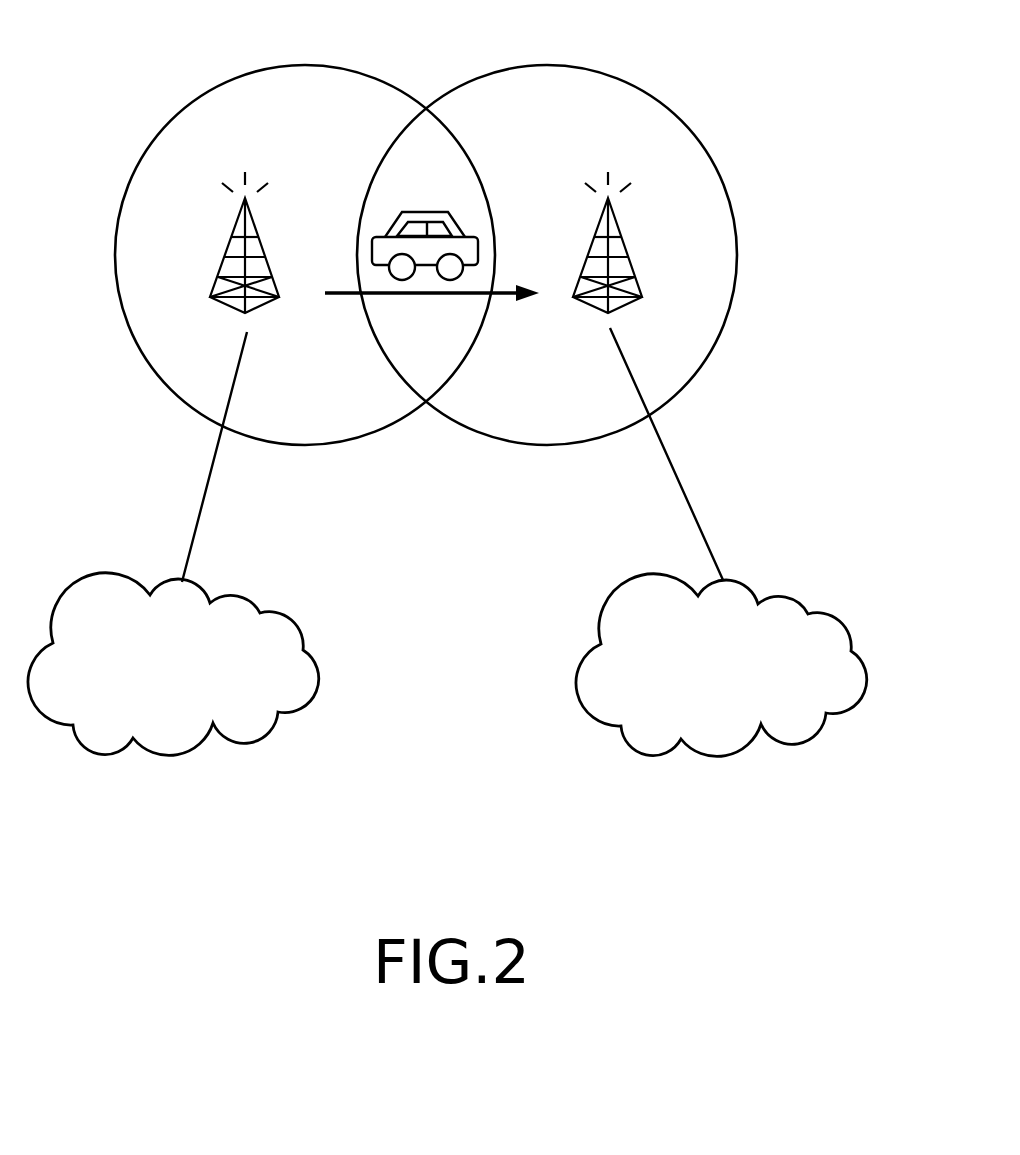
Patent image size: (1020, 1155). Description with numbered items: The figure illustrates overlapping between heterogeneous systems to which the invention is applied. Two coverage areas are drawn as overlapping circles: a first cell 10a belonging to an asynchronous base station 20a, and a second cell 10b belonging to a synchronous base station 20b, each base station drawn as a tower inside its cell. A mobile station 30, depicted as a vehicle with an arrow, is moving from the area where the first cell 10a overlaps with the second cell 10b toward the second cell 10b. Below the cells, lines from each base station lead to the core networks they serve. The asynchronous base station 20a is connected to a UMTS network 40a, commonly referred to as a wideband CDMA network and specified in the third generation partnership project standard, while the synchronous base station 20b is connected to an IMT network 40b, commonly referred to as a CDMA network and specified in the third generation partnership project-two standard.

The first cell 10a is at (308, 65).
The second cell 10b is at (547, 65).
The asynchronous base station 20a is at (229, 256).
The synchronous base station 20b is at (625, 257).
The mobile station 30 is at (427, 211).
The UMTS network 40a is at (299, 622).
The IMT-2000 network 40b is at (847, 622).